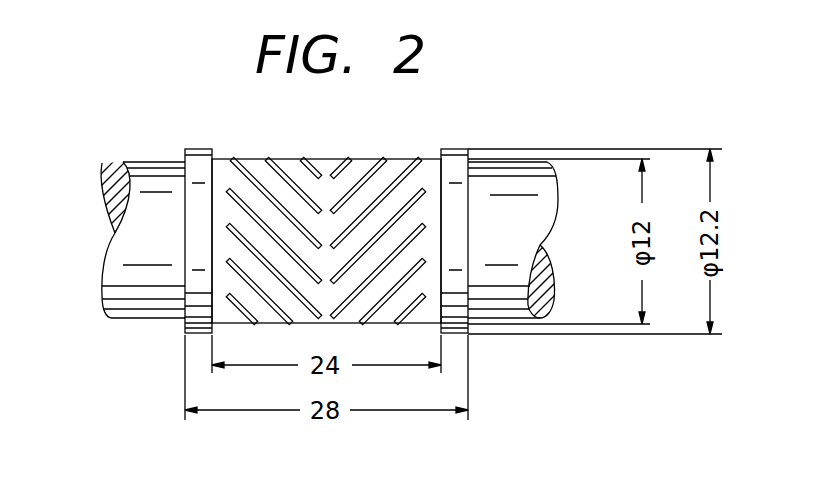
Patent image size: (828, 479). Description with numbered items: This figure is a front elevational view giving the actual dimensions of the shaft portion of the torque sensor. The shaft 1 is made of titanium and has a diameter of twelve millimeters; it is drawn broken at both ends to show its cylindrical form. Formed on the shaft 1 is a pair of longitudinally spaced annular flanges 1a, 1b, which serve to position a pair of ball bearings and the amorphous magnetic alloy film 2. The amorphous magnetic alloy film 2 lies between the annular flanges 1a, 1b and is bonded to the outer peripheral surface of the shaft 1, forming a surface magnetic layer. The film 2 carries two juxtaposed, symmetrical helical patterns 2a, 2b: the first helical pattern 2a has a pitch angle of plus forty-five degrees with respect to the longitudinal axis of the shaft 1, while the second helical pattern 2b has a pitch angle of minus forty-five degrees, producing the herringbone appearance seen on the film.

The shaft 1 is at (327, 233).
The annular flange 1a is at (197, 213).
The annular flange 1b is at (458, 212).
The amorphous magnetic alloy film 2 is at (326, 208).
The first helical pattern 2a is at (273, 214).
The second helical pattern 2b is at (377, 214).